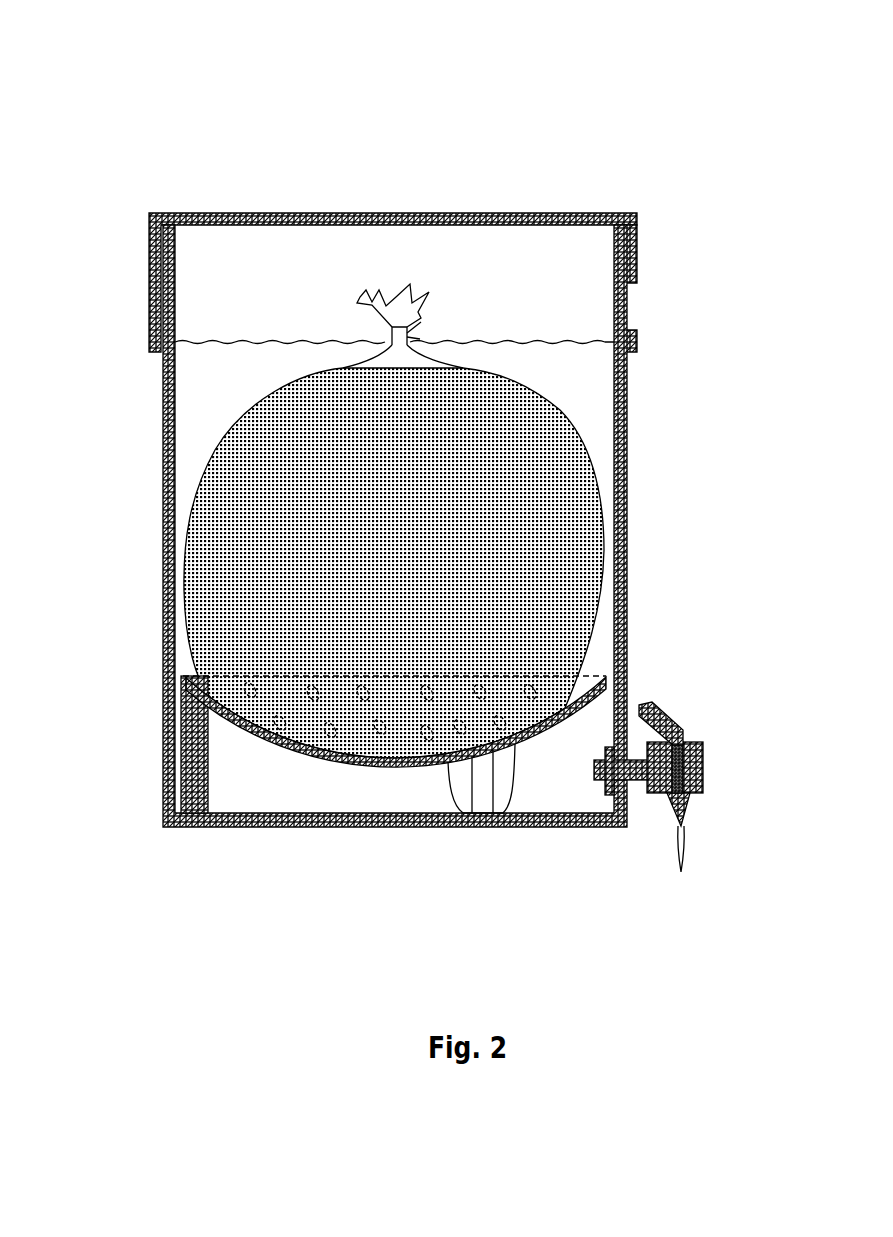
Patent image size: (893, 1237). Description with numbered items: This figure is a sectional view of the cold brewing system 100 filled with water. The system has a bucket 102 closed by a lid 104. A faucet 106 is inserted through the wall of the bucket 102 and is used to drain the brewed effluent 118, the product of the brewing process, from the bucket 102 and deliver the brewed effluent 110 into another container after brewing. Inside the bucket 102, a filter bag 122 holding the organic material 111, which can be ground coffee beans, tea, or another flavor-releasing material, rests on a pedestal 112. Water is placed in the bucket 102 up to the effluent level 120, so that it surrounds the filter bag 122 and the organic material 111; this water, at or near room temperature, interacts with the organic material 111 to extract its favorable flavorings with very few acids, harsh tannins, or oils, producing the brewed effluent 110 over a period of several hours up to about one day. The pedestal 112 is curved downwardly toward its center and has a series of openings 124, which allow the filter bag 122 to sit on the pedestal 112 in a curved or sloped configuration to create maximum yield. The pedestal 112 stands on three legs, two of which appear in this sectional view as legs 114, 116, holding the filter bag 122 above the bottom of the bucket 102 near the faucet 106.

The cold brewing system 100 is at (532, 67).
The bucket 102 is at (160, 372).
The lid 104 is at (593, 203).
The faucet 106 is at (697, 698).
The brewed effluent 110 is at (690, 838).
The organic material 111 is at (575, 491).
The pedestal 112 is at (338, 754).
The leg 114 is at (208, 768).
The leg 116 is at (510, 761).
The brewed effluent 118 is at (580, 422).
The effluent level 120 is at (520, 343).
The filter bag 122 is at (203, 493).
The openings 124 is at (543, 690).